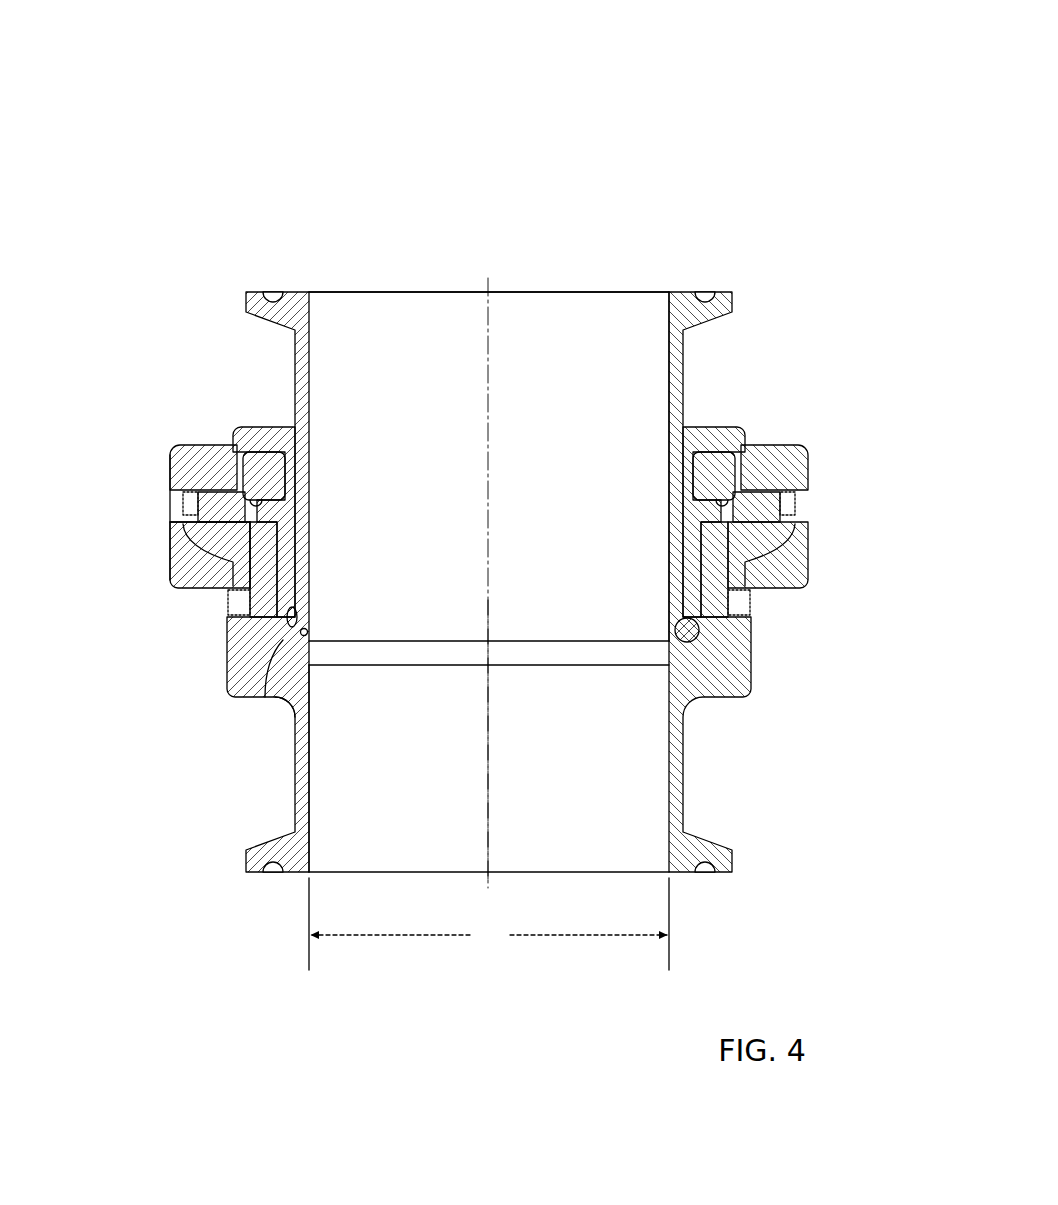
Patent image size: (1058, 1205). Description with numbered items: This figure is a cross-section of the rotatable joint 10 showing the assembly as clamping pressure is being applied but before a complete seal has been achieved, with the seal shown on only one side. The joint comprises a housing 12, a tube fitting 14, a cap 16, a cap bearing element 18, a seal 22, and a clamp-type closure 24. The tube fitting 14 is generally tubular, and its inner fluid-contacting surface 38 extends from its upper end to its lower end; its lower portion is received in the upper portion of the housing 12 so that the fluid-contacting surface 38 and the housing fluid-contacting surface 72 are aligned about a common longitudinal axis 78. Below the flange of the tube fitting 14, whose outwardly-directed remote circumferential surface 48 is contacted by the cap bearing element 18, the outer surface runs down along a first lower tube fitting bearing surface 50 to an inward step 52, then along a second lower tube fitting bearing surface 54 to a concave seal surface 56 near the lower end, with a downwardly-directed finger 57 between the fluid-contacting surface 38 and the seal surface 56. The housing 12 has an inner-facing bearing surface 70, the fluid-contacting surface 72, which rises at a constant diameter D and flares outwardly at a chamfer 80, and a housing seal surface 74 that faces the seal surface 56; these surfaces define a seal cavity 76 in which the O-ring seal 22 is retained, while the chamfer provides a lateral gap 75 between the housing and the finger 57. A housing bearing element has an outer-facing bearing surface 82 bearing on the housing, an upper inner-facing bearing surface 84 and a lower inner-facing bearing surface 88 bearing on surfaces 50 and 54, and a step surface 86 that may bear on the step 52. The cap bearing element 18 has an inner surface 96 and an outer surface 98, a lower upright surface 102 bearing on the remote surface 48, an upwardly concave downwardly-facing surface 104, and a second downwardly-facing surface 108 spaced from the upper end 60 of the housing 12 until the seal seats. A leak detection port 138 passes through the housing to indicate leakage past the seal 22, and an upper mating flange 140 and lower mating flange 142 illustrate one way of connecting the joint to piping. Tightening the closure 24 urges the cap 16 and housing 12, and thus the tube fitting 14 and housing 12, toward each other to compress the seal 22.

The rotatable joint 10 is at (771, 116).
The housing 12 is at (455, 876).
The tube fitting 14 is at (416, 290).
The cap 16 is at (714, 423).
The cap bearing element 18 is at (256, 443).
The seal 22 is at (690, 635).
The clamp-type closure 24 is at (167, 541).
The fluid-contacting surface 38 is at (668, 352).
The remote circumferential surface 48 is at (198, 498).
The first lower tube fitting bearing surface 50 is at (258, 530).
The inward step 52 is at (760, 582).
The second lower tube fitting bearing surface 54 is at (250, 587).
The seal surface 56 is at (306, 626).
The finger 57 is at (678, 626).
The upper end 60 is at (760, 510).
The inner-facing bearing surface 70 is at (240, 620).
The fluid-contacting surface 72 is at (308, 820).
The housing seal surface 74 is at (307, 636).
The lateral gap 75 is at (290, 707).
The seal cavity 76 is at (283, 639).
The longitudinal axis 78 is at (488, 852).
The chamfer 80 is at (598, 653).
The outer-facing bearing surface 82 is at (228, 568).
The upper inner-facing bearing surface 84 is at (212, 540).
The step surface 86 is at (705, 548).
The lower inner-facing bearing surface 88 is at (252, 582).
The inner surface 96 is at (289, 472).
The outer surface 98 is at (237, 473).
The lower upright surface 102 is at (758, 500).
The downwardly-facing surface 104 is at (252, 498).
The second downwardly-facing surface 108 is at (745, 520).
The leak detection port 138 is at (742, 610).
The upper mating flange 140 is at (730, 302).
The lower mating flange 142 is at (735, 872).